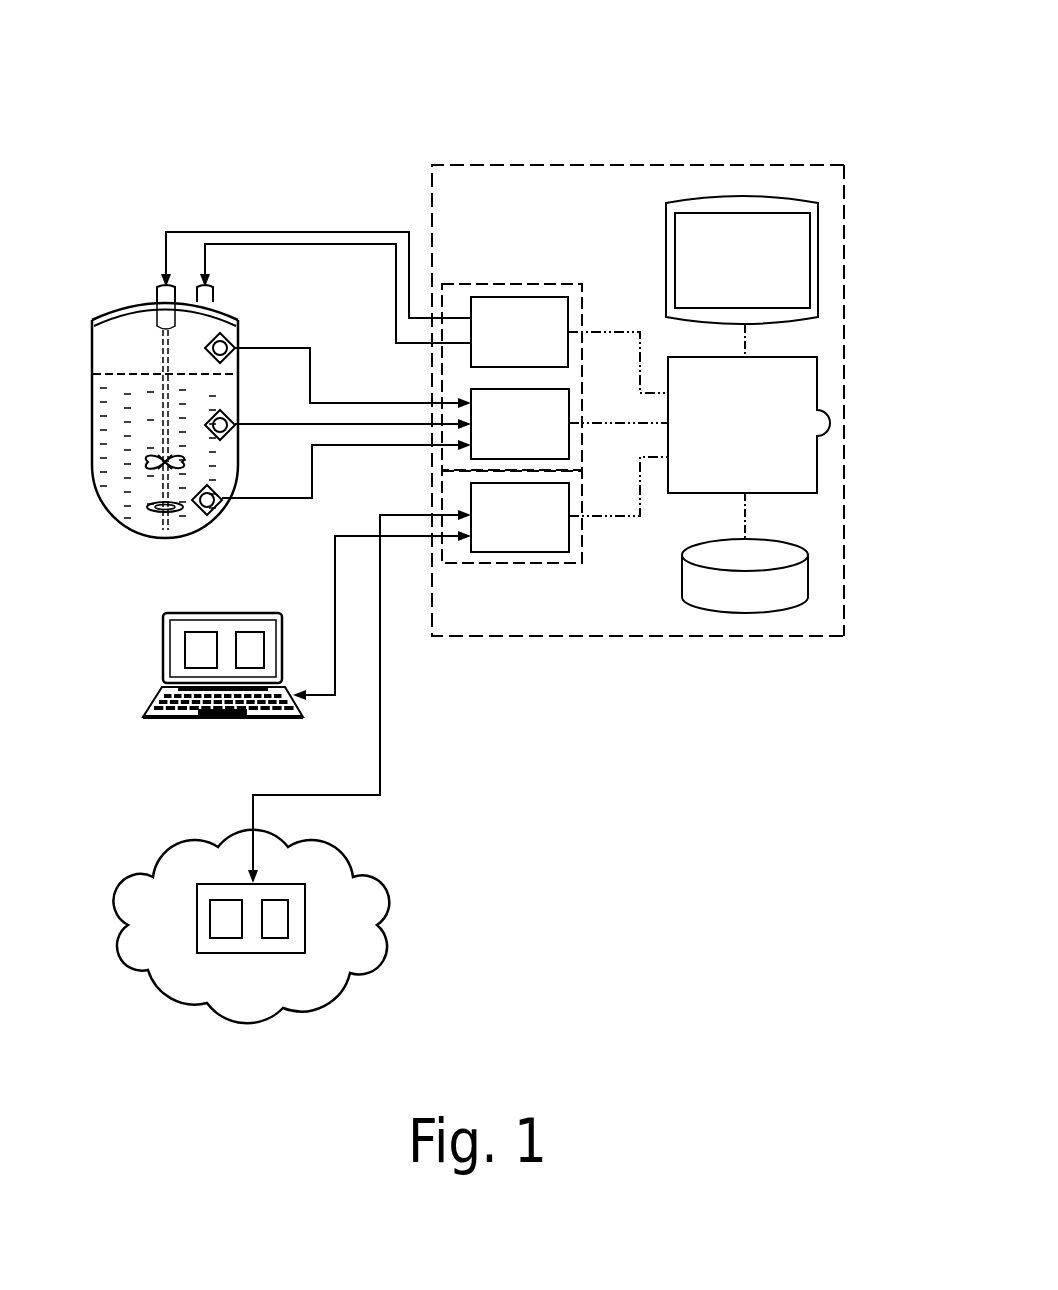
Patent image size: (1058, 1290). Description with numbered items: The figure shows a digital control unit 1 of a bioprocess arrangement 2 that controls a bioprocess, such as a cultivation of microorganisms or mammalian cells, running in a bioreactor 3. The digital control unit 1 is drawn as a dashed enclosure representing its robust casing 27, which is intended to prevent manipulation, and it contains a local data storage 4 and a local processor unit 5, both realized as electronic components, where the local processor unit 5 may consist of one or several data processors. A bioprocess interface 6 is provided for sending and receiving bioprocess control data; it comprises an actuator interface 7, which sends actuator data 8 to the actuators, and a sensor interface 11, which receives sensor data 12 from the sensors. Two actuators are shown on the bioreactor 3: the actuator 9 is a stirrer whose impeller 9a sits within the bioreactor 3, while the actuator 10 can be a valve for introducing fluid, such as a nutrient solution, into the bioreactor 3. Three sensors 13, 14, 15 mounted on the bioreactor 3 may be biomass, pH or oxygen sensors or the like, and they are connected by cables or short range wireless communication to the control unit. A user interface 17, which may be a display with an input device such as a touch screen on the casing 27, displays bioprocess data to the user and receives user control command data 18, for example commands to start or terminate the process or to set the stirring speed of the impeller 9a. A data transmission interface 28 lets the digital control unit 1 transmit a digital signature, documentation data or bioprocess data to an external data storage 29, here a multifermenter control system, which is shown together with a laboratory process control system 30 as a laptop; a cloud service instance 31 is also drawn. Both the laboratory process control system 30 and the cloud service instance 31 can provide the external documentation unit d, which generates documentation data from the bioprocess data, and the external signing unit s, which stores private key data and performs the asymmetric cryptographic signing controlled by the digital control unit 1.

The digital control unit 1 is at (685, 356).
The bioprocess arrangement 2 is at (760, 82).
The bioreactor 3 is at (86, 539).
The local data storage 4 is at (755, 607).
The local processor unit 5 is at (752, 441).
The bioprocess interface 6 is at (485, 283).
The actuator interface 7 is at (529, 347).
The actuator data 8 is at (607, 327).
The actuator 9 is at (157, 290).
The impeller 9a is at (147, 467).
The actuator 10 is at (228, 290).
The sensor interface 11 is at (538, 439).
The sensor data 12 is at (597, 421).
The sensor 13 is at (232, 340).
The sensor 14 is at (232, 415).
The sensor 15 is at (222, 487).
The user interface 17 is at (762, 276).
The user control command data 18 is at (748, 343).
The casing 27 is at (845, 277).
The data transmission interface 28 is at (538, 532).
The external data storage 29 is at (249, 624).
The laboratory process control system 30 is at (146, 677).
The cloud service instance 31 is at (149, 825).
The external documentation unit d is at (200, 637).
The external signing unit s is at (247, 635).